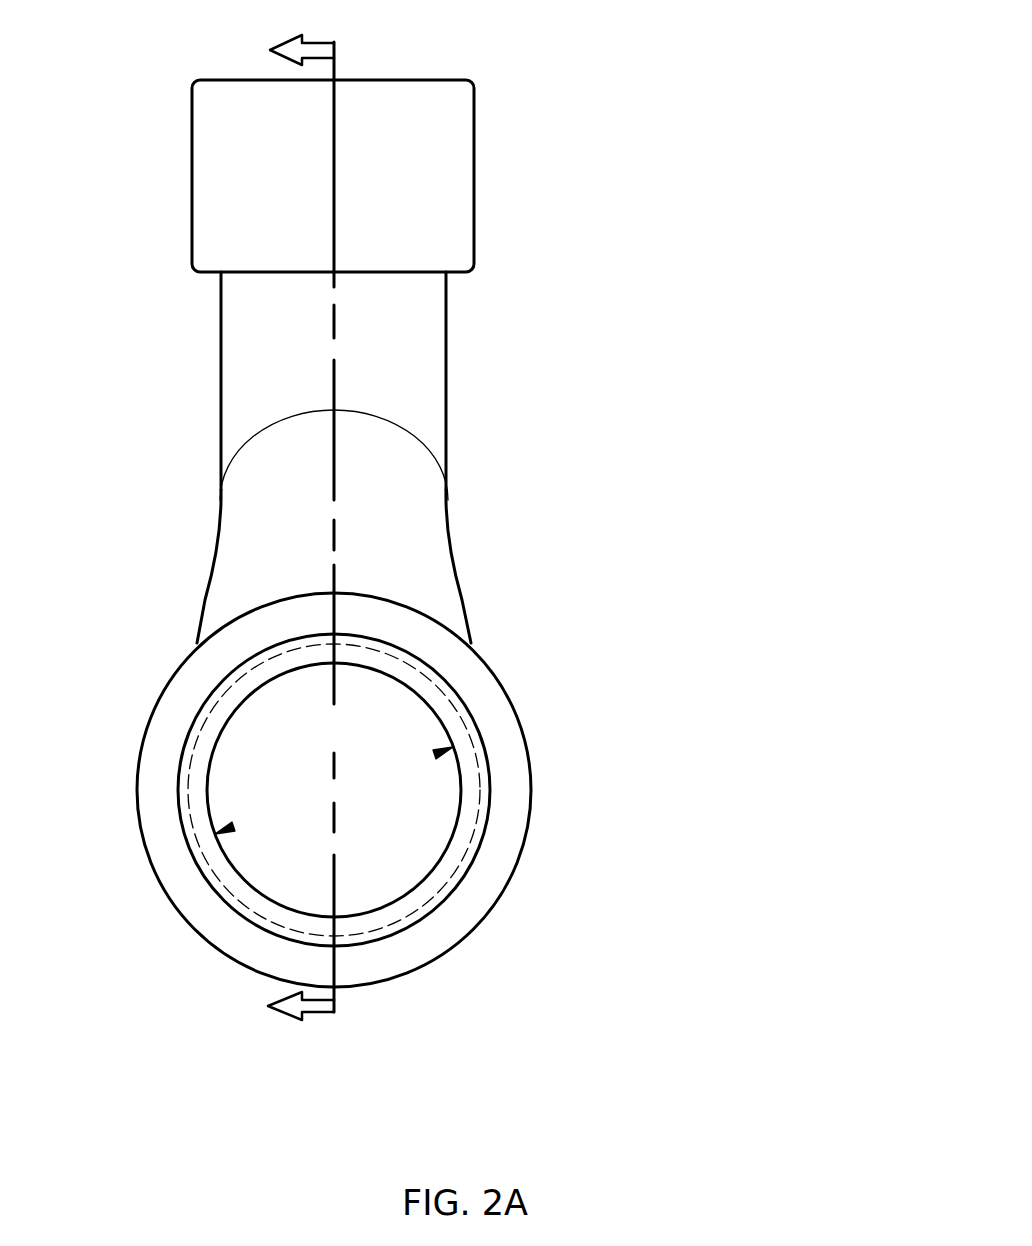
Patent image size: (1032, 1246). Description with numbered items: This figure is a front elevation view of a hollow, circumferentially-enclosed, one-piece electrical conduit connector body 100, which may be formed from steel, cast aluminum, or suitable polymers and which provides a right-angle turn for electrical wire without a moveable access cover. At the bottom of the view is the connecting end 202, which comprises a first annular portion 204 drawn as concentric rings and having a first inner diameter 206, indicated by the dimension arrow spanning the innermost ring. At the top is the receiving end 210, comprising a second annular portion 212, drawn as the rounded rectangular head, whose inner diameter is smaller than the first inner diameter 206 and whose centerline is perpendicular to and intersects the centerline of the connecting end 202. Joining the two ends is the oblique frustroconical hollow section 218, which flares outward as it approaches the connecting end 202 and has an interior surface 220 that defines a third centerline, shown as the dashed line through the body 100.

The conduit connector body 100 is at (802, 64).
The connecting end 202 is at (210, 862).
The first annular portion 204 is at (177, 812).
The first inner diameter 206 is at (215, 834).
The receiving end 210 is at (484, 82).
The second annular portion 212 is at (235, 163).
The oblique frustroconical hollow section 218 is at (262, 575).
The interior surface 220 is at (360, 744).